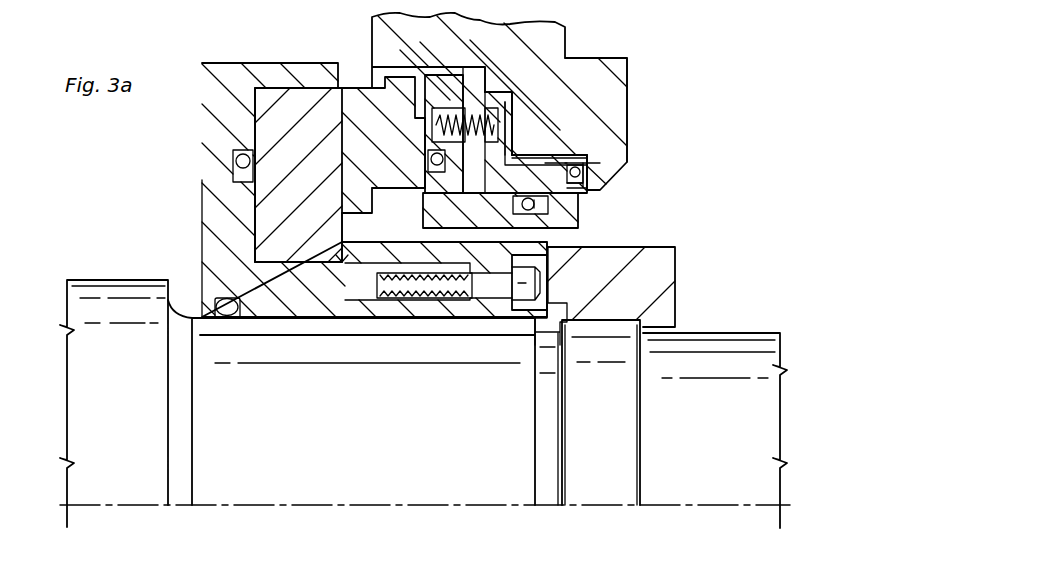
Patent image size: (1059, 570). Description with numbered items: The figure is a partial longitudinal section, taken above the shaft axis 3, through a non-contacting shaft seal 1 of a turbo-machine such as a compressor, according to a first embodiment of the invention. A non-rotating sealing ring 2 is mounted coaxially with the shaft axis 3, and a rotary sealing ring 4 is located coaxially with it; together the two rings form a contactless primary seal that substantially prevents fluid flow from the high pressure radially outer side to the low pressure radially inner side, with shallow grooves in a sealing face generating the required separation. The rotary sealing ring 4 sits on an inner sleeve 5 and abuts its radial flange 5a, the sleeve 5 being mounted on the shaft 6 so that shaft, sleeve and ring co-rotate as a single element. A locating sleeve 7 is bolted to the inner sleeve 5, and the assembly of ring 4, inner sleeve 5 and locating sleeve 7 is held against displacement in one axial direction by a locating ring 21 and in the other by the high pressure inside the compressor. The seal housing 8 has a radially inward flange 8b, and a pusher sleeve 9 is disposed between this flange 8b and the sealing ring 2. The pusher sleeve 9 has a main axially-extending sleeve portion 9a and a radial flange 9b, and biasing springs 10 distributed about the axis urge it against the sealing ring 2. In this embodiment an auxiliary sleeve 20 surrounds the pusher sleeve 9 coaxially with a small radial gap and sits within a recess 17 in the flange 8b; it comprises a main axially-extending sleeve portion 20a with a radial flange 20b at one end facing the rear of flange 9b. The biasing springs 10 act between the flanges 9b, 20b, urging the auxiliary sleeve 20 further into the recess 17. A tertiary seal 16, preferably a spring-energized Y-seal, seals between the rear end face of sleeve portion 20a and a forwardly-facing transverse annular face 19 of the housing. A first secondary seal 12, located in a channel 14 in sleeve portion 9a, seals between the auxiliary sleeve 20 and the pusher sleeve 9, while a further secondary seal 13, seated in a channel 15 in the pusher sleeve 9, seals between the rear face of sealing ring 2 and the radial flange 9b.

The shaft seal 1 is at (722, 106).
The sealing ring 2 is at (358, 87).
The shaft axis 3 is at (348, 498).
The rotary sealing ring 4 is at (304, 88).
The inner sleeve 5 is at (202, 145).
The radial flange 5a is at (213, 200).
The shaft 6 is at (115, 280).
The locating sleeve 7 is at (328, 223).
The seal housing 8 is at (372, 22).
The radially inward flange 8b is at (628, 97).
The pusher sleeve 9 is at (562, 212).
The main axially-extending sleeve portion 9a is at (563, 232).
The radial flange 9b is at (455, 82).
The biasing spring 10 is at (473, 98).
The first secondary seal 12 is at (546, 205).
The further secondary seal 13 is at (428, 155).
The channel 14 is at (483, 232).
The channel 15 is at (418, 190).
The tertiary seal 16 is at (582, 172).
The recess 17 is at (557, 152).
The transverse annular face 19 is at (590, 140).
The auxiliary sleeve 20 is at (514, 110).
The main axially-extending sleeve portion 20a is at (543, 162).
The radial flange 20b is at (497, 103).
The locating ring 21 is at (676, 291).